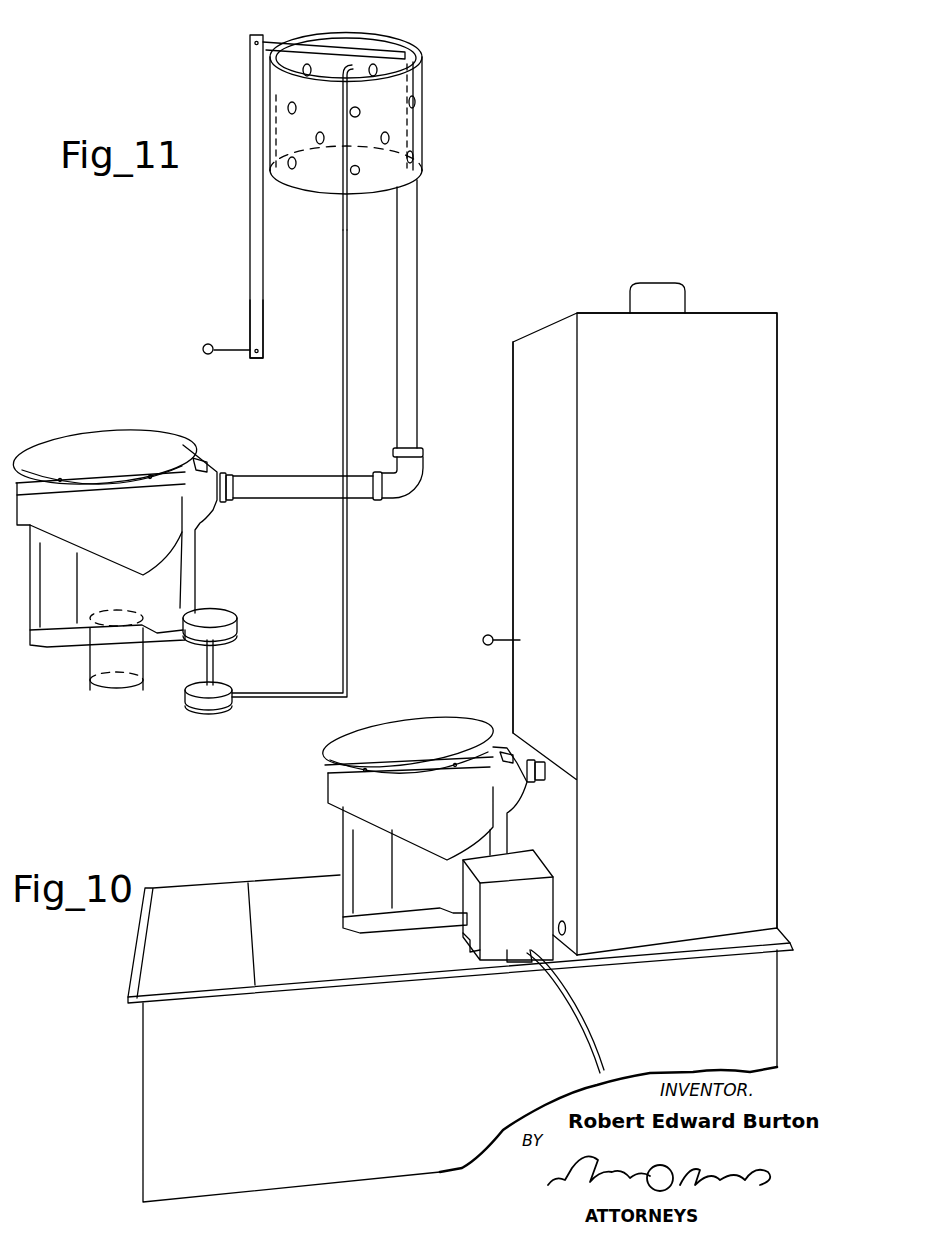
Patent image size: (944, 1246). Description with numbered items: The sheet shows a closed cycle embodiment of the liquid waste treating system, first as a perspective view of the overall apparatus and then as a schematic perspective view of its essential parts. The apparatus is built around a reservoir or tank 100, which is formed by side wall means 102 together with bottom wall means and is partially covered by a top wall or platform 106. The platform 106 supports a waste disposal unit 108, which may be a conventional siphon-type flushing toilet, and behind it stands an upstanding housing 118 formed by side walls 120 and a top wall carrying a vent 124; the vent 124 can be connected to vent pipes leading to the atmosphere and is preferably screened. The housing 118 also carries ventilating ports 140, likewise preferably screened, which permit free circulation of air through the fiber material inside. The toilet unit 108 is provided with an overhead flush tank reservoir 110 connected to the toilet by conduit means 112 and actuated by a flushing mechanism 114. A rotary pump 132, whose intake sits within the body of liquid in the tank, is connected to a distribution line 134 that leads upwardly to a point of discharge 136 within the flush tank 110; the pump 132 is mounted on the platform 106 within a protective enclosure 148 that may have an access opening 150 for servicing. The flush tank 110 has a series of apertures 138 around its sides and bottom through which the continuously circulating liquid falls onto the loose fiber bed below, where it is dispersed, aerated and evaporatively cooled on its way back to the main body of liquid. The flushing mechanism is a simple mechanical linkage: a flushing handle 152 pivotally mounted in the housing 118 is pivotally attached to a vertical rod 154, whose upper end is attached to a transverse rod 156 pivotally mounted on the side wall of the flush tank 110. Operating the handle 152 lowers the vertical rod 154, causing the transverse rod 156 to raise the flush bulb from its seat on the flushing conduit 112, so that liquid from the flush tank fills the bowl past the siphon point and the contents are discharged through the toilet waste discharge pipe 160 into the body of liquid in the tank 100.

In FIG. 10, the tank 100 is at (168, 1082).
In FIG. 10, the side wall means 102 is at (378, 1167).
In FIG. 10, the platform 106 is at (267, 895).
In FIG. 11, the waste disposal unit 108 is at (114, 535).
In FIG. 10, the waste disposal unit 108 is at (335, 790).
In FIG. 11, the flush tank reservoir 110 is at (425, 86).
In FIG. 11, the conduit means 112 is at (417, 327).
In FIG. 11, the flushing mechanism 114 is at (248, 267).
In FIG. 10, the housing 118 is at (603, 562).
In FIG. 10, the side walls 120 is at (737, 328).
In FIG. 10, the vent 124 is at (670, 290).
In FIG. 11, the rotary pump 132 is at (230, 617).
In FIG. 11, the distribution line 134 is at (348, 628).
In FIG. 11, the point of discharge 136 is at (353, 67).
In FIG. 11, the apertures 138 is at (414, 104).
In FIG. 10, the ventilating ports 140 is at (553, 912).
In FIG. 10, the protective enclosure 148 is at (490, 925).
In FIG. 10, the access opening 150 is at (537, 867).
In FIG. 11, the flushing handle 152 is at (203, 353).
In FIG. 10, the flushing handle 152 is at (485, 645).
In FIG. 11, the vertical rod 154 is at (263, 316).
In FIG. 11, the transverse rod 156 is at (420, 47).
In FIG. 11, the toilet waste discharge pipe 160 is at (113, 690).